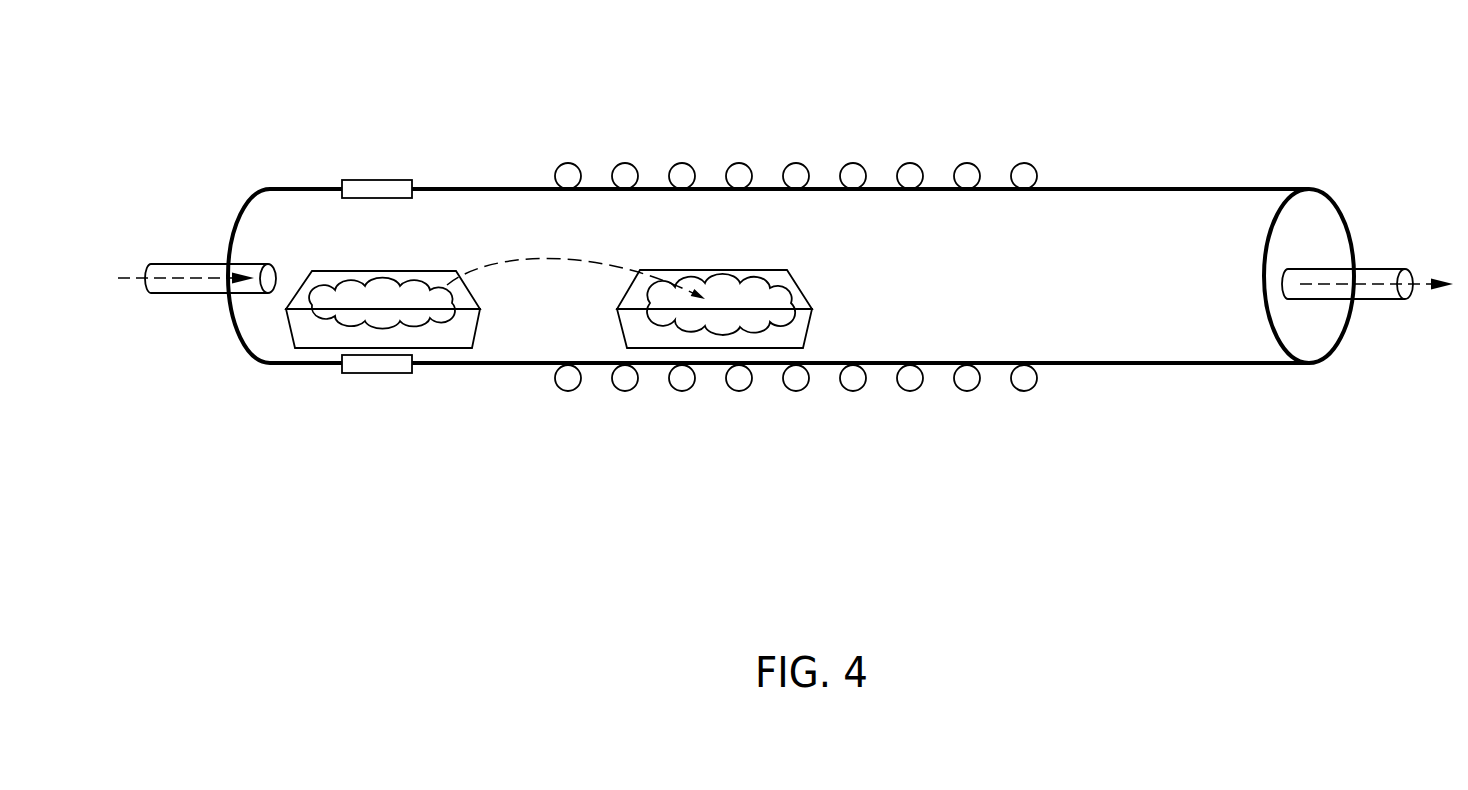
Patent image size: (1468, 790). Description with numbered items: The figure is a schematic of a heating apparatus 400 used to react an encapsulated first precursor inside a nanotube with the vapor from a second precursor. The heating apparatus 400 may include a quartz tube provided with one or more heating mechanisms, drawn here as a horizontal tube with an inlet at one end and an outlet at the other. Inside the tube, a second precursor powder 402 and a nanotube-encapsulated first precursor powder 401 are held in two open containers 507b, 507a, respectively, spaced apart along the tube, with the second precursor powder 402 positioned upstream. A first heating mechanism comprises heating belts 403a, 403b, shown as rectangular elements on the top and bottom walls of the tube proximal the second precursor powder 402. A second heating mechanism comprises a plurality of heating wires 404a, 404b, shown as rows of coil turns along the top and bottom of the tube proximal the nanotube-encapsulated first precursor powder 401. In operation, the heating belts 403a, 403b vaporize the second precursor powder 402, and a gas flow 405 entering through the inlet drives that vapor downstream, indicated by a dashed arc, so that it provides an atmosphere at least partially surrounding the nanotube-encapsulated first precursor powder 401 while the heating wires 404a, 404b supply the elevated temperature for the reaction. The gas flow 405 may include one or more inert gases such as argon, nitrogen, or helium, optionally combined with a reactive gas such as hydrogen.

The heating apparatus 400 is at (1183, 210).
The nanotube-encapsulated first precursor powder 401 is at (761, 292).
The second precursor powder 402 is at (347, 300).
The heating belt 403a is at (368, 192).
The heating belt 403b is at (368, 367).
The heating wires 404a is at (1037, 157).
The heating wires 404b is at (1037, 406).
The gas flow 405 is at (161, 277).
The boat 507a is at (790, 327).
The boat 507b is at (302, 320).